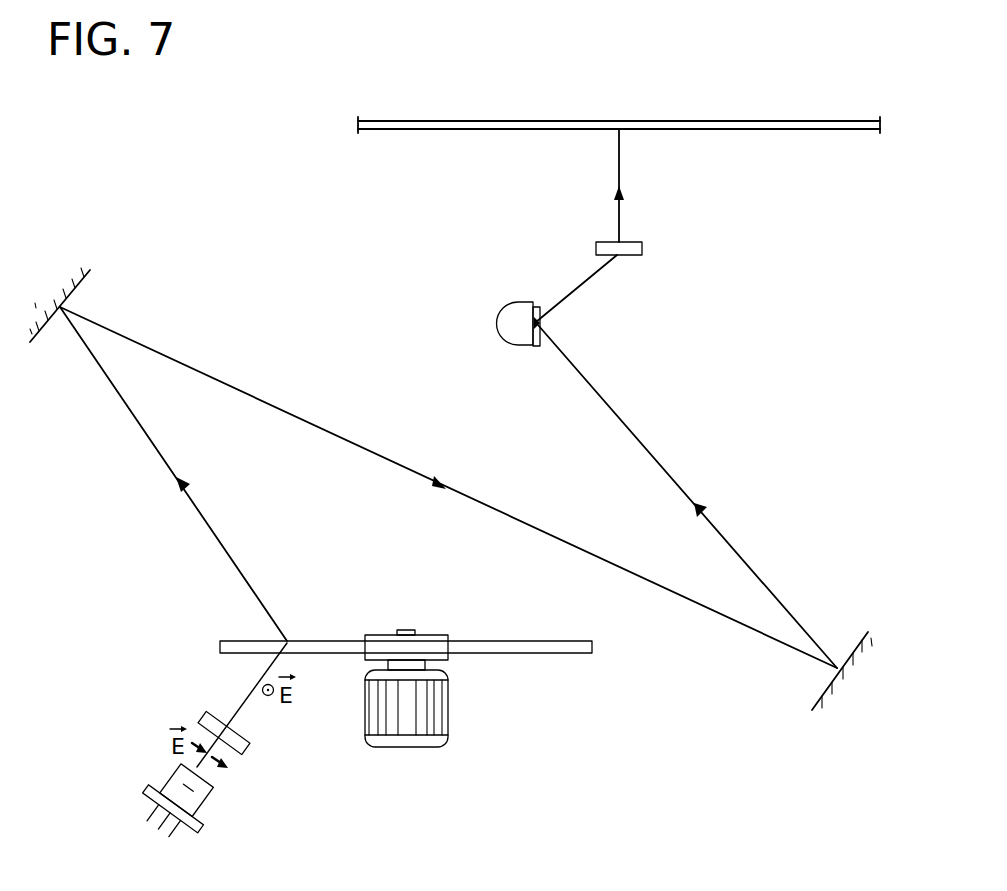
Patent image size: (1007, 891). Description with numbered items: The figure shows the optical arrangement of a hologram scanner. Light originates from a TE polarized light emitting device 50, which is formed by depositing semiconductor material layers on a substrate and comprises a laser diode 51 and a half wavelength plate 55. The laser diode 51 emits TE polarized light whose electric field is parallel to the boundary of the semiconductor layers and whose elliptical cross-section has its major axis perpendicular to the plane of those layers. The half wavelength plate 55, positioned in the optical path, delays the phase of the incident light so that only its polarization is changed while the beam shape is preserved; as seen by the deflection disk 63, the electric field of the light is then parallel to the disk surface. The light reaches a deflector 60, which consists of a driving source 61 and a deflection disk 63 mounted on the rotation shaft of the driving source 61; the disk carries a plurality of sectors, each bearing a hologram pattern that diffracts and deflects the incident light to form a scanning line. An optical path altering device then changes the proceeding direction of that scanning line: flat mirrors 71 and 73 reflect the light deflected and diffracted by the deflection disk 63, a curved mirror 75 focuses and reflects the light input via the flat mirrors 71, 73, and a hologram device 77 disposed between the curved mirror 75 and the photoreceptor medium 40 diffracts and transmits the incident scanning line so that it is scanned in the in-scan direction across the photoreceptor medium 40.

The photoreceptor medium 40 is at (785, 110).
The TE polarized light emitting device 50 is at (234, 780).
The laser diode 51 is at (216, 810).
The half wavelength plate 55 is at (240, 745).
The deflector 60 is at (408, 718).
The driving source 61 is at (422, 747).
The deflection disk 63 is at (578, 653).
The flat mirror 71 is at (78, 270).
The flat mirror 73 is at (862, 633).
The curved mirror 75 is at (516, 346).
The hologram device 77 is at (643, 248).